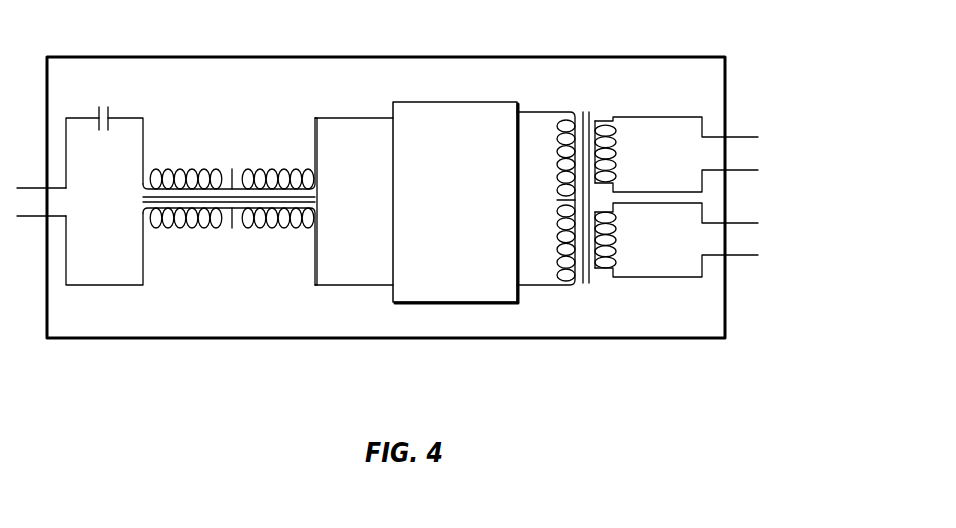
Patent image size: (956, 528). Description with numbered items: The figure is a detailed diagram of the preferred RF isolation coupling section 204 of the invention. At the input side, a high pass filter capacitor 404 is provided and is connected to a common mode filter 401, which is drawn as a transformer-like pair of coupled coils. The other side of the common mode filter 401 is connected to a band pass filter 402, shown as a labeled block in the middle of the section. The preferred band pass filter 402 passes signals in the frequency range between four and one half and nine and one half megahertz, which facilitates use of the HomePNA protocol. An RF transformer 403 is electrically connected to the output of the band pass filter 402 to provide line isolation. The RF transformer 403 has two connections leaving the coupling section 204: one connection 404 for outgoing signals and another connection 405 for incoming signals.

The RF isolation coupling section 204 is at (633, 57).
The common mode filter 401 is at (233, 162).
The band pass filter 402 is at (460, 102).
The RF transformer 403 is at (598, 118).
The high pass filter capacitor 404 is at (115, 113).
The connection for incoming signals 405 is at (750, 239).